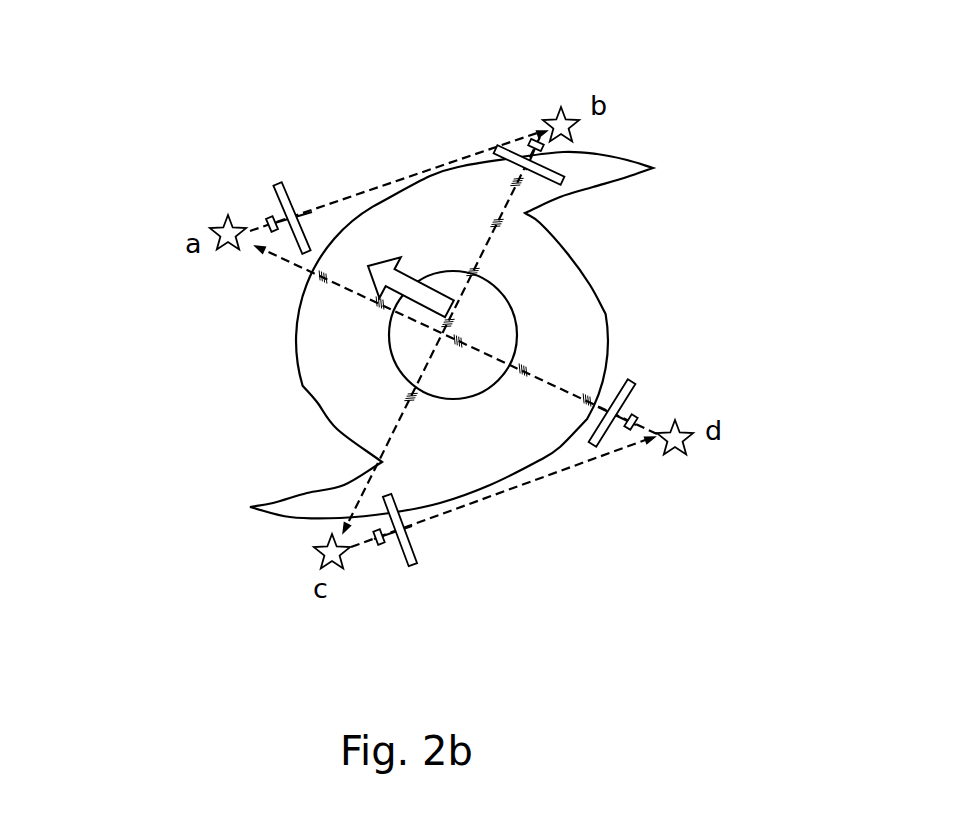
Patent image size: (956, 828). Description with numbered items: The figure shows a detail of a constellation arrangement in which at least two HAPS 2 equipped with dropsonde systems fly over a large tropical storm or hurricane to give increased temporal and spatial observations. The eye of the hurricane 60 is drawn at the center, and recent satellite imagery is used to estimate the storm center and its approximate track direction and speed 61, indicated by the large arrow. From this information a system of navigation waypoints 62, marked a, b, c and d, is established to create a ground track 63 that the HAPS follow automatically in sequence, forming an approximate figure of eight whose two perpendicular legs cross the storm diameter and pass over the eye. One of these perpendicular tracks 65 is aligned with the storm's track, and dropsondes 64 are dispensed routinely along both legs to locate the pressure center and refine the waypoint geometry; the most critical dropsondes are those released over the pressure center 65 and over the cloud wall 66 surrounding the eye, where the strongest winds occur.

The HAPS 2 is at (646, 372).
The eye of a hurricane 60 is at (505, 288).
The track direction and speed 61 is at (377, 258).
The navigation waypoints 62 is at (227, 206).
The ground track 63 is at (333, 198).
The dropsondes 64 is at (491, 224).
The pressure center of the storm 65 is at (450, 354).
The cloud wall 66 is at (368, 315).